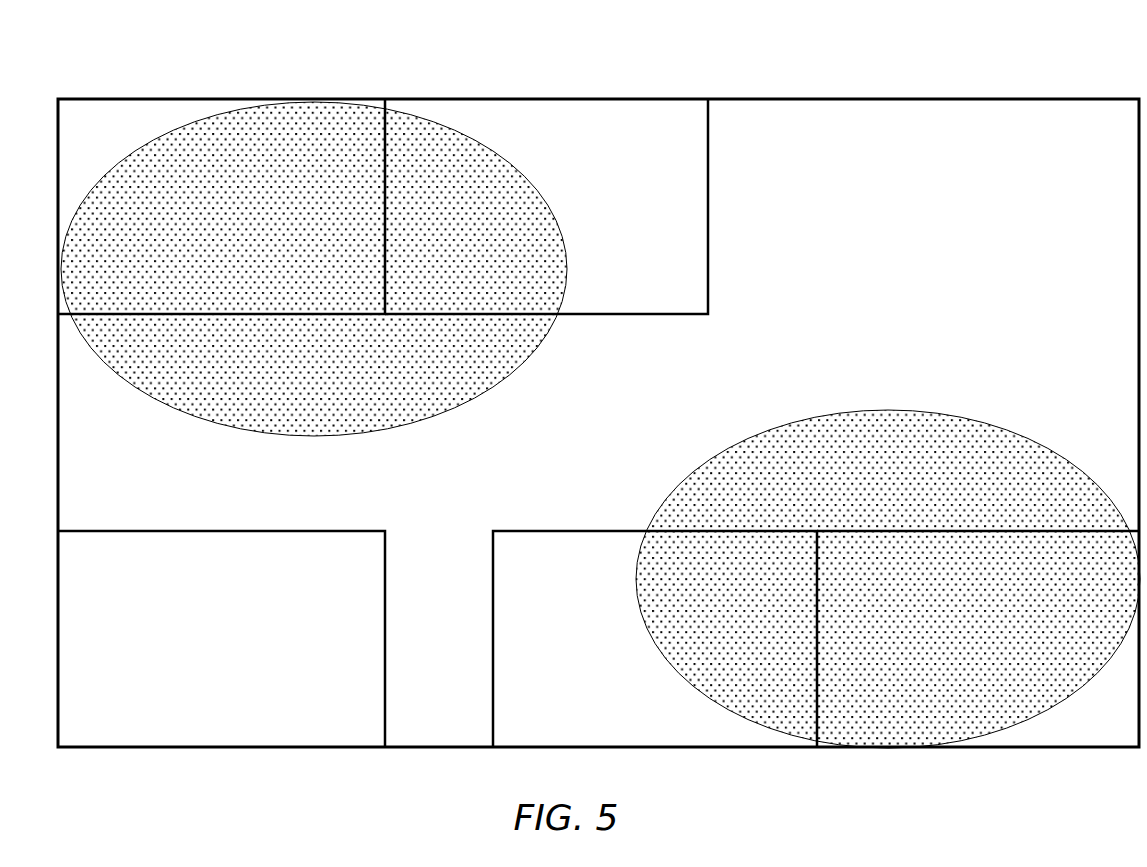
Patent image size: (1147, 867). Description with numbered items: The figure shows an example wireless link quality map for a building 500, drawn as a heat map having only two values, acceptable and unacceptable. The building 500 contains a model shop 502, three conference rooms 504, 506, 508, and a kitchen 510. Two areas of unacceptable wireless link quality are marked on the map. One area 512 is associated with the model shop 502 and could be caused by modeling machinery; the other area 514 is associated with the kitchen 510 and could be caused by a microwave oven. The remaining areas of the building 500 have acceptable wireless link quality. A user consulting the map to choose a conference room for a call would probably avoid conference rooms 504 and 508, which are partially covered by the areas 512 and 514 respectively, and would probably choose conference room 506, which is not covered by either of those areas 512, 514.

The building 500 is at (561, 45).
The model shop 502 is at (206, 226).
The conference room 504 is at (530, 228).
The conference room 506 is at (206, 656).
The conference room 508 is at (640, 658).
The kitchen 510 is at (964, 658).
The area of unacceptable wireless link quality 512 is at (310, 437).
The area of unacceptable wireless link quality 514 is at (890, 409).